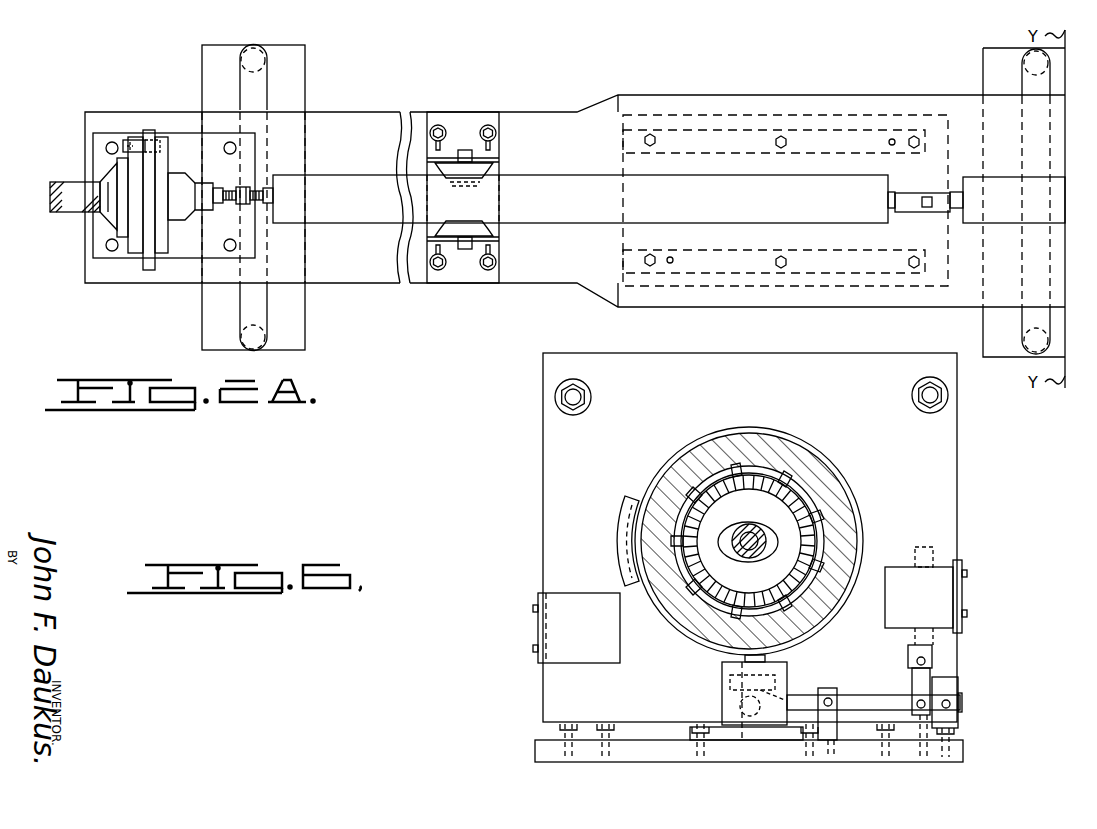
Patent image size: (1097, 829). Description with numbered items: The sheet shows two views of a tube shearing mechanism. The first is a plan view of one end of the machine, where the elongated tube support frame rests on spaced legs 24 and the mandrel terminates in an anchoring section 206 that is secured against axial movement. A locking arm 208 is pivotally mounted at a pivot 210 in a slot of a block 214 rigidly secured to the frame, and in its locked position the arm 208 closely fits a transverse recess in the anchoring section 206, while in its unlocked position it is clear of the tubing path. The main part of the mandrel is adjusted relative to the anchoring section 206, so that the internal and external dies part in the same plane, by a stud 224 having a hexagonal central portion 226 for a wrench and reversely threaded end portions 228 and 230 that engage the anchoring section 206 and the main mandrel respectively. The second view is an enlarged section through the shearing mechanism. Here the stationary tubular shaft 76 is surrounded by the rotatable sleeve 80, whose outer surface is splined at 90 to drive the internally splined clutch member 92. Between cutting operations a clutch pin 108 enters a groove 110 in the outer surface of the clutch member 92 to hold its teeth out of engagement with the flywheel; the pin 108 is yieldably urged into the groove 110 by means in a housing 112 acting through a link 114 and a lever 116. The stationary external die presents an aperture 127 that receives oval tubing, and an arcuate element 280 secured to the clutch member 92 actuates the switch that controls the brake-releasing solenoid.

In FIG. 2A, the legs 24 is at (1030, 350).
In FIG. 2A, the anchoring section 206 is at (185, 173).
In FIG. 2A, the locking arm 208 is at (148, 255).
In FIG. 2A, the pivot 210 is at (143, 133).
In FIG. 2A, the block 214 is at (136, 255).
In FIG. 2A, the stud 224 is at (270, 173).
In FIG. 2A, the hexagonal central portion 226 is at (242, 205).
In FIG. 2A, the threaded end portion 228 is at (223, 205).
In FIG. 2A, the threaded end portion 230 is at (262, 205).
In FIG. 6, the stationary tubular shaft 76 is at (812, 524).
In FIG. 6, the sleeve 80 is at (815, 478).
In FIG. 6, the splines 90 is at (798, 446).
In FIG. 6, the clutch member 92 is at (826, 500).
In FIG. 6, the clutch pin 108 is at (787, 661).
In FIG. 6, the groove 110 is at (810, 624).
In FIG. 6, the housing 112 is at (893, 567).
In FIG. 6, the link 114 is at (912, 682).
In FIG. 6, the lever 116 is at (855, 697).
In FIG. 6, the aperture 127 is at (762, 530).
In FIG. 6, the arcuate element 280 is at (682, 636).